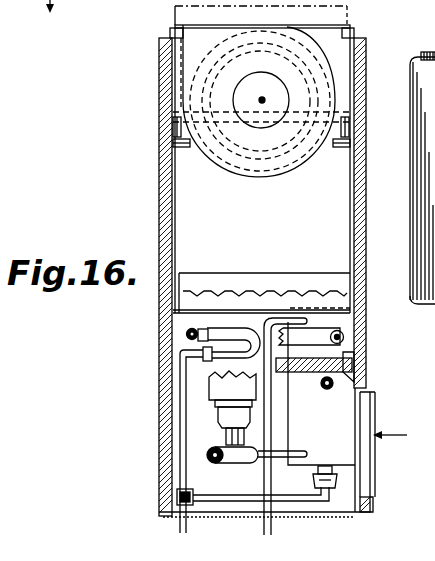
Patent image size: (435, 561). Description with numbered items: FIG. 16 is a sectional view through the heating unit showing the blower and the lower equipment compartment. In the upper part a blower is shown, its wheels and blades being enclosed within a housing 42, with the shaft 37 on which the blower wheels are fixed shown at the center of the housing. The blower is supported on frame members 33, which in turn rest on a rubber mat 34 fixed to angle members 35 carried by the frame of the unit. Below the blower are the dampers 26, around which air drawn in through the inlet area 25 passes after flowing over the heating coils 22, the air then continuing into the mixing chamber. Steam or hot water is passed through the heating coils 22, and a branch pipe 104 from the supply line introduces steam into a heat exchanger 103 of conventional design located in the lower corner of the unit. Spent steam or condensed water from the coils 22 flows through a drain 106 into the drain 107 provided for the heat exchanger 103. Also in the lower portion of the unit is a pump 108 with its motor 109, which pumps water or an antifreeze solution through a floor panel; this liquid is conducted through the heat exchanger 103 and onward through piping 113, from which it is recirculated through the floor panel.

The housing 42 is at (180, 72).
The frame members 33 is at (173, 125).
The shaft 37 is at (263, 96).
The angle members 35 is at (192, 148).
The rubber mat 34 is at (330, 141).
The dampers 26 is at (246, 292).
The drain 106 is at (187, 330).
The heating coils 22 is at (344, 337).
The inlet area 25 is at (371, 392).
The branch pipe 104 is at (331, 388).
The motor 109 is at (209, 388).
The heat exchanger 103 is at (321, 405).
The pump 108 is at (226, 462).
The drain 107 is at (178, 526).
The piping 113 is at (275, 521).